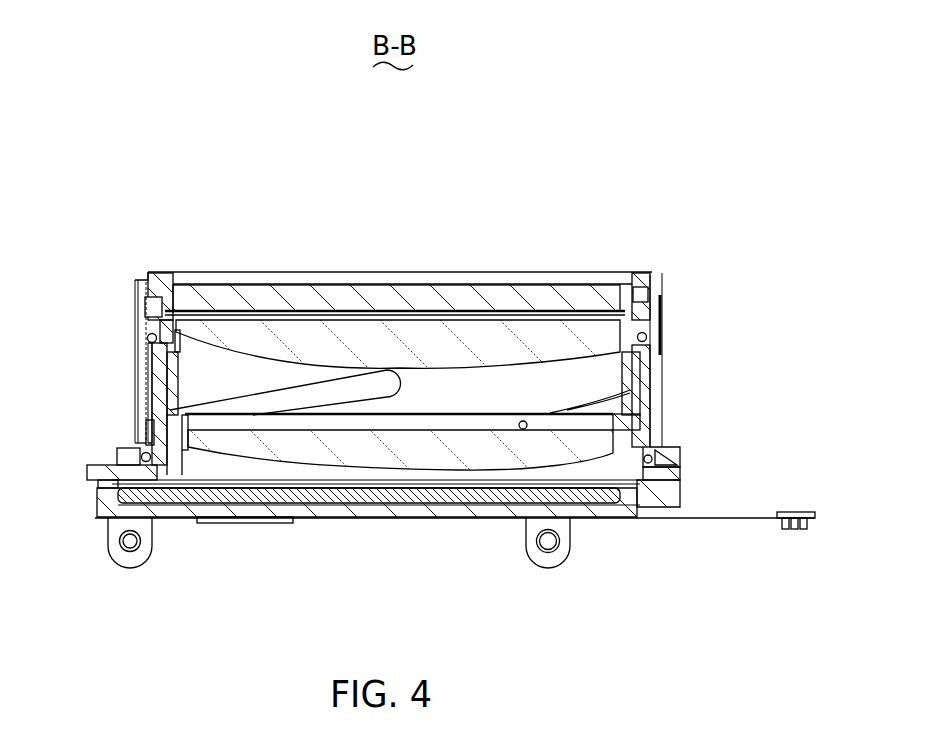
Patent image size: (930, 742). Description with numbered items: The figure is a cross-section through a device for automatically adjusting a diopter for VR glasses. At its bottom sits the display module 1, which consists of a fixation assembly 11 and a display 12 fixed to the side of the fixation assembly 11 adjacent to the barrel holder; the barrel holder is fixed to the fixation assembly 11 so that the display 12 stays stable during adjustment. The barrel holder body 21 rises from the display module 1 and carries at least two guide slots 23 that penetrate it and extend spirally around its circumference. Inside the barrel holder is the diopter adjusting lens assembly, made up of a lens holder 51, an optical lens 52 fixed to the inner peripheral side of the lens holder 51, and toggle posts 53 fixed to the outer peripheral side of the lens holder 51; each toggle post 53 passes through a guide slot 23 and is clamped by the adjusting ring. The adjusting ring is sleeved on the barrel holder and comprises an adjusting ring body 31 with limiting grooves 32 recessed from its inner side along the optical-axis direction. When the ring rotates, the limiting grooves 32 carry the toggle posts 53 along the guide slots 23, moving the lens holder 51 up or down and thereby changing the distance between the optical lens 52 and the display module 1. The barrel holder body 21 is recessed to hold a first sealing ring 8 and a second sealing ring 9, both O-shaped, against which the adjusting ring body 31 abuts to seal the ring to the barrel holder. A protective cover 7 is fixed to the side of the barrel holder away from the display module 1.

The display module 1 is at (402, 583).
The protective cover 7 is at (576, 275).
The first sealing ring 8 is at (652, 459).
The second sealing ring 9 is at (647, 337).
The fixation assembly 11 is at (307, 500).
The display 12 is at (383, 482).
The barrel holder body 21 is at (600, 378).
The guide slot 23 is at (257, 402).
The adjusting ring body 31 is at (137, 373).
The limiting groove 32 is at (148, 402).
The lens holder 51 is at (170, 435).
The optical lens 52 is at (460, 448).
The toggle post 53 is at (148, 428).